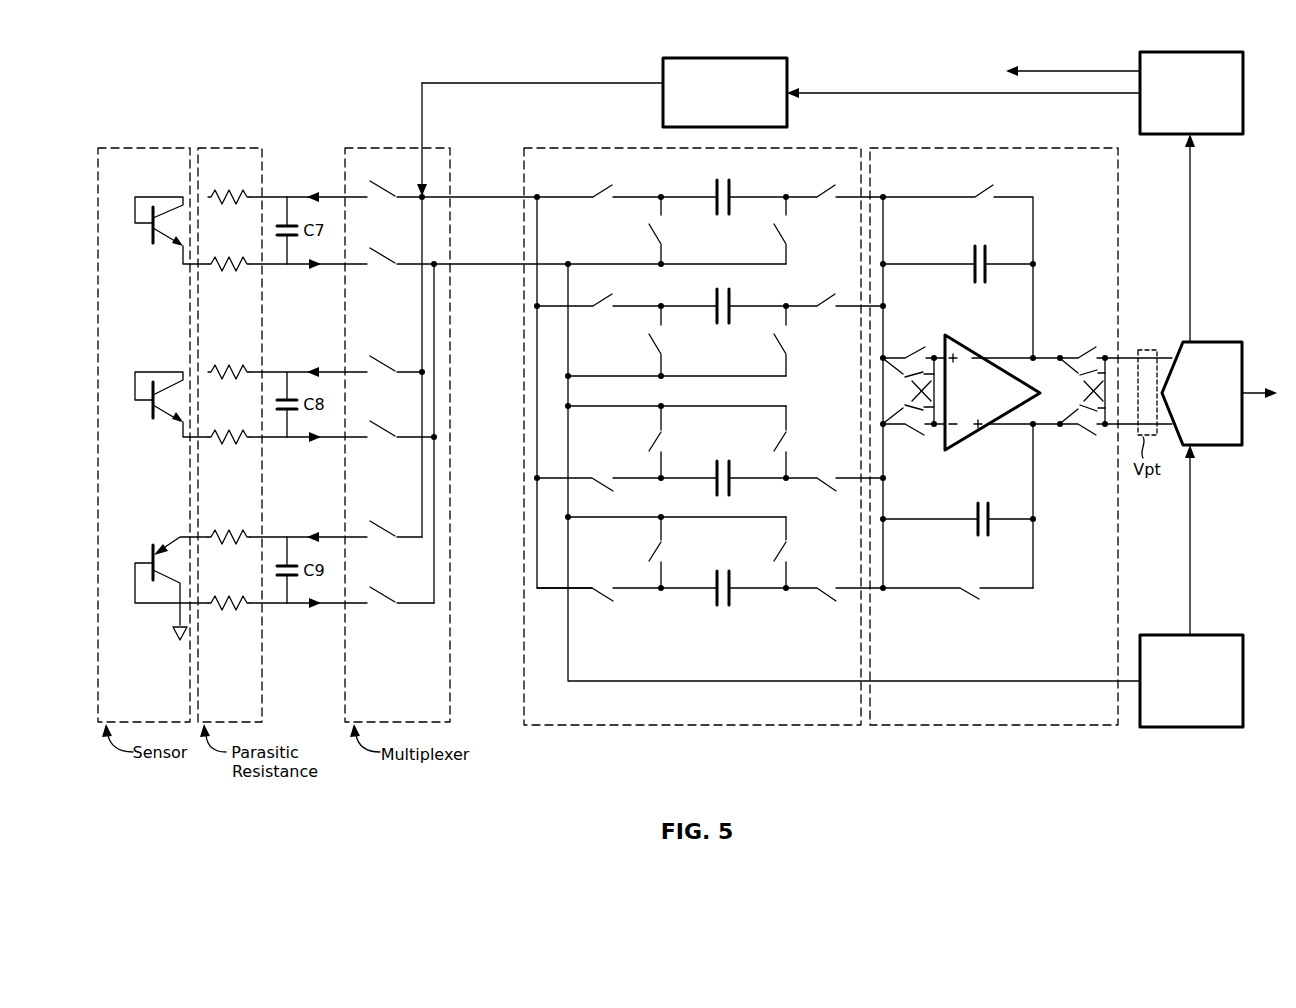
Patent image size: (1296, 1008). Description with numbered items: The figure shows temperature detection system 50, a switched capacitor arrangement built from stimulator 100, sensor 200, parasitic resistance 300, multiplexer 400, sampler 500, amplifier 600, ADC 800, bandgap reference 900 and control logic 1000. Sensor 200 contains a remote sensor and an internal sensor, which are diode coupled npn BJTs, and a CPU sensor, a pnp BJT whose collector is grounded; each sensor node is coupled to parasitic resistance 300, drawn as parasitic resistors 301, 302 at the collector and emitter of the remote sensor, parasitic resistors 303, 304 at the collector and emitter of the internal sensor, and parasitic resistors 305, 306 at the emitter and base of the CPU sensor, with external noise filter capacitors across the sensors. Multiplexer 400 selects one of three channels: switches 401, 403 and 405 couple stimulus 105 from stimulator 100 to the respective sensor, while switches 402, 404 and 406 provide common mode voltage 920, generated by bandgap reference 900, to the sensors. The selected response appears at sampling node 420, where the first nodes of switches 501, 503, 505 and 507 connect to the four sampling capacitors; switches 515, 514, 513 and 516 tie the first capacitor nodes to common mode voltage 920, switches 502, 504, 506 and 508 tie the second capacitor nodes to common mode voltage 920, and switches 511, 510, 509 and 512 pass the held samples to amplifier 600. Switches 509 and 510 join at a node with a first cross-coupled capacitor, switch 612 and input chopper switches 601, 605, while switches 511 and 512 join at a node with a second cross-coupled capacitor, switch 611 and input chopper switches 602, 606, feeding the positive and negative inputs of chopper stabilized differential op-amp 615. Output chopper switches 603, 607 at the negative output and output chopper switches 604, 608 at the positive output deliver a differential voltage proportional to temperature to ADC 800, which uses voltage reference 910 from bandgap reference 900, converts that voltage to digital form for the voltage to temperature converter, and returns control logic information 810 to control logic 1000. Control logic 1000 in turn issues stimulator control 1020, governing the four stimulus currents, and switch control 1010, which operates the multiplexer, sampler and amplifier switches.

The temperature detection system 50 is at (270, 58).
The stimulator 100 is at (725, 92).
The stimulus 105 is at (542, 83).
The sensor 200 is at (153, 435).
The parasitic resistance 300 is at (230, 435).
The parasitic resistor 301 is at (229, 185).
The parasitic resistor 302 is at (229, 276).
The parasitic resistor 303 is at (229, 360).
The parasitic resistor 304 is at (229, 448).
The parasitic resistor 305 is at (229, 525).
The parasitic resistor 306 is at (229, 613).
The multiplexer 400 is at (397, 435).
The switch 401 is at (391, 202).
The switch 402 is at (397, 269).
The switch 403 is at (392, 377).
The switch 404 is at (398, 442).
The switch 405 is at (392, 540).
The switch 406 is at (398, 607).
The sampling node 420 is at (477, 310).
The common mode voltage Vcm 920 is at (499, 422).
The sampler 500 is at (832, 436).
The switch 501 is at (599, 470).
The switch 502 is at (798, 442).
The switch 503 is at (599, 313).
The switch 504 is at (798, 341).
The switch 505 is at (599, 204).
The switch 506 is at (799, 230).
The switch 507 is at (599, 579).
The switch 508 is at (798, 552).
The switch 509 is at (834, 182).
The switch 510 is at (834, 291).
The switch 511 is at (834, 492).
The switch 512 is at (834, 604).
The switch 513 is at (676, 230).
The switch 514 is at (674, 341).
The switch 515 is at (676, 442).
The switch 516 is at (676, 552).
The amplifier 600 is at (1021, 436).
The input chopper switch 601 is at (958, 343).
The input chopper switch 602 is at (958, 441).
The output chopper switch 603 is at (1102, 343).
The output chopper switch 604 is at (1102, 441).
The input chopper switch 605 is at (906, 380).
The input chopper switch 606 is at (906, 401).
The output chopper switch 607 is at (1075, 380).
The output chopper switch 608 is at (1075, 401).
The switch 611 is at (958, 580).
The switch 612 is at (958, 271).
The op-amp 615 is at (968, 349).
The ADC 800 is at (1222, 393).
The control logic information CLI 810 is at (1209, 238).
The bandgap reference 900 is at (1191, 681).
The voltage reference Vref 910 is at (1210, 540).
The control logic 1000 is at (1191, 93).
The switch control SWC 1010 is at (1073, 70).
The stimulator control STC 1020 is at (963, 91).